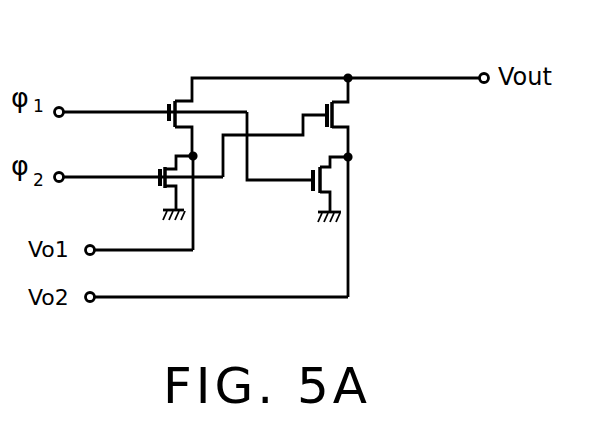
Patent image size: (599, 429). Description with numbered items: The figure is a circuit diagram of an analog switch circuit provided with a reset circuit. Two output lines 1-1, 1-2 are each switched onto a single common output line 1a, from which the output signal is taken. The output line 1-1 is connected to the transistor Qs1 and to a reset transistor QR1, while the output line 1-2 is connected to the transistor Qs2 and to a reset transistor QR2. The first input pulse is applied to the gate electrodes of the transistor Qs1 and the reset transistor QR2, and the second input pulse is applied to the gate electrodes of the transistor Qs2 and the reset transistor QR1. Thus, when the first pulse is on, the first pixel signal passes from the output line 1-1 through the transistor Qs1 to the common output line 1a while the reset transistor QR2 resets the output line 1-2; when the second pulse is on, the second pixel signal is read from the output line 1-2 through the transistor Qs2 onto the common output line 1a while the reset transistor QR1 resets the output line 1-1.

The common output line 1a is at (417, 78).
The output line 1-1 is at (226, 166).
The output line 1-2 is at (348, 187).
The transistor Qs1 is at (238, 111).
The reset transistor QR1 is at (149, 188).
The transistor Qs2 is at (363, 117).
The reset transistor QR2 is at (304, 189).